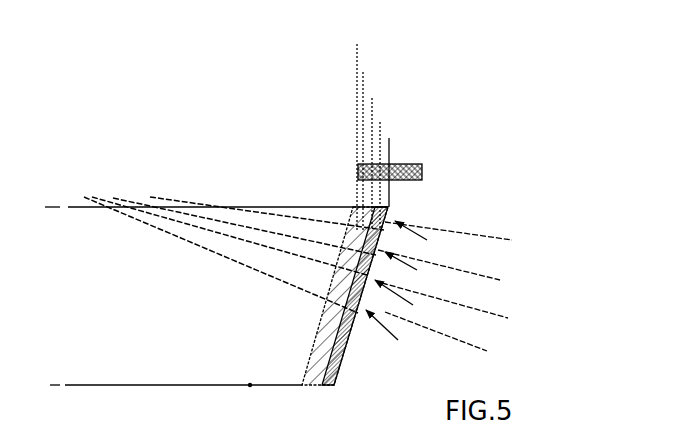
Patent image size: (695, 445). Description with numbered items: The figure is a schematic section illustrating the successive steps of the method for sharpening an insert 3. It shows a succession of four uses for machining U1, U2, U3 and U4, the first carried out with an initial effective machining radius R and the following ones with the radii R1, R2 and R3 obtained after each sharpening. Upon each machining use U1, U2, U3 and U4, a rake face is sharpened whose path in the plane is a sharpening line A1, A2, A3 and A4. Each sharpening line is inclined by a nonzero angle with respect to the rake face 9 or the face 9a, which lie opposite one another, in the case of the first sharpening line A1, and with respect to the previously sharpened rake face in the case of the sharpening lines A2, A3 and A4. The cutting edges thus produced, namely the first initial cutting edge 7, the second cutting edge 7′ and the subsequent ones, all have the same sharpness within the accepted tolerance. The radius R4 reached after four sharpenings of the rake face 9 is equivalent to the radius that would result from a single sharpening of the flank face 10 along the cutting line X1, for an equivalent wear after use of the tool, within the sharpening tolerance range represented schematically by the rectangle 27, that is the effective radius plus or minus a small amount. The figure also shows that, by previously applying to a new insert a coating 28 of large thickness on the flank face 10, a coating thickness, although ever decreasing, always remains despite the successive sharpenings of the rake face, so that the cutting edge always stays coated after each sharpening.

The rake face 9 is at (307, 206).
The face 9a is at (248, 388).
The insert 3 is at (172, 288).
The coating 28 is at (338, 384).
The flank face 10 is at (355, 328).
The cutting line X1 is at (302, 385).
The rectangle 27 is at (422, 180).
The initial effective machining radius R is at (389, 142).
The effective machining radius after first sharpening R1 is at (380, 126).
The effective machining radius after second sharpening R2 is at (372, 101).
The effective machining radius after third sharpening R3 is at (363, 76).
The radius after four sharpenings R4 is at (357, 48).
The first use for machining U1 is at (488, 238).
The second use for machining U2 is at (491, 279).
The third use for machining U3 is at (486, 315).
The fourth use for machining U4 is at (480, 349).
The first sharpening line A1 is at (421, 238).
The second sharpening line A2 is at (411, 270).
The third sharpening line A3 is at (404, 301).
The fourth sharpening line A4 is at (392, 333).
The first initial cutting edge 7 is at (397, 212).
The second cutting edge 7′ is at (405, 227).